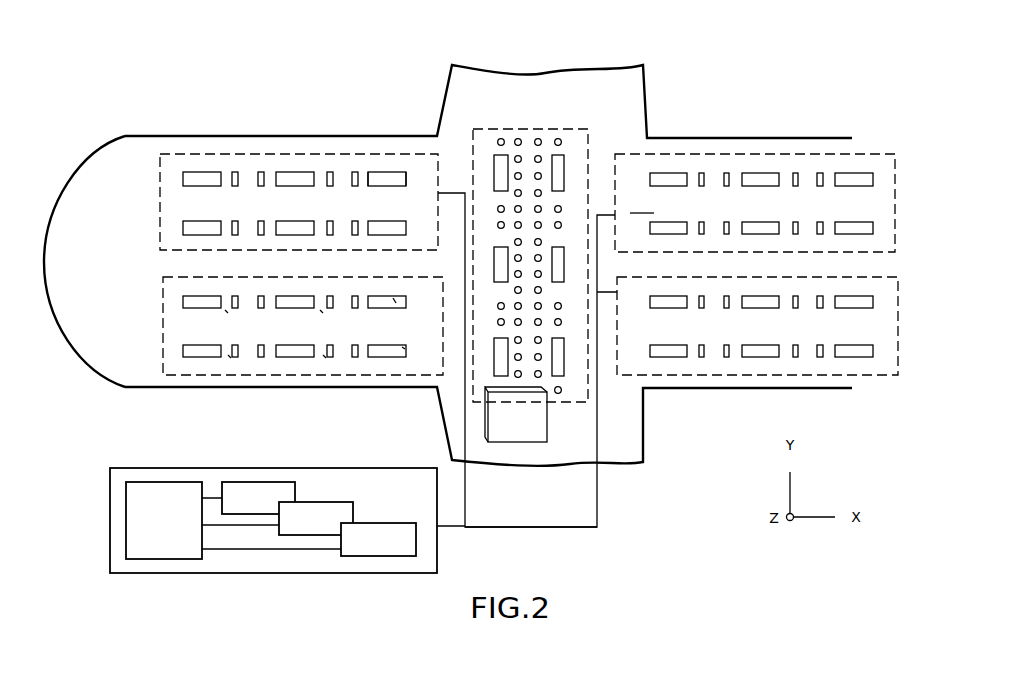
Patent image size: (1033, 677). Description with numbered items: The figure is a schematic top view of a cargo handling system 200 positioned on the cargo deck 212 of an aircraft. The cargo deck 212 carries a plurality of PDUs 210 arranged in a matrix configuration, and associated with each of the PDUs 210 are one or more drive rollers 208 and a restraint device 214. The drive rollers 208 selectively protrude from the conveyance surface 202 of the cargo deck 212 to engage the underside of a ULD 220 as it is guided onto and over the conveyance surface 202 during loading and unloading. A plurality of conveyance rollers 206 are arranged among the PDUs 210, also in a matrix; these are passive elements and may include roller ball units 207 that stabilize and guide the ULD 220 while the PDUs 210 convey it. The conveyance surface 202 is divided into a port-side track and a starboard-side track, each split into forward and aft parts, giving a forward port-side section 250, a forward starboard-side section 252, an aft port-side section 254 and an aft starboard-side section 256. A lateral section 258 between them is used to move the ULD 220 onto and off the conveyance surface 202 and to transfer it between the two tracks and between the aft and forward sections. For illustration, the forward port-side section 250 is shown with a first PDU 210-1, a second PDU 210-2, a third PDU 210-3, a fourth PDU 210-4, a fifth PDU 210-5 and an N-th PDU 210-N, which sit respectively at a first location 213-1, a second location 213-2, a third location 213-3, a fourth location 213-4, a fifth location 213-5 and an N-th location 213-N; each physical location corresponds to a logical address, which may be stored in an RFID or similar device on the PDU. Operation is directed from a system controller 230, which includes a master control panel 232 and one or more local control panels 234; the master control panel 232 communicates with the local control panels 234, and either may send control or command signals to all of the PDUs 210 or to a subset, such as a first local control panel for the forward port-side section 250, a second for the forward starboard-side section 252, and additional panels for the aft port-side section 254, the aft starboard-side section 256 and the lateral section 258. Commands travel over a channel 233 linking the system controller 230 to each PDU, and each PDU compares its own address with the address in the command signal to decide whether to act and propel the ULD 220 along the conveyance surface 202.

The cargo handling system 200 is at (143, 73).
The conveyance surface 202 is at (642, 204).
The conveyance rollers 206 is at (822, 180).
The roller ball units 207 is at (562, 132).
The drive rollers 208 is at (400, 177).
The PDUs 210 is at (395, 174).
The cargo deck 212 is at (342, 177).
The restraint device 214 is at (368, 178).
The ULD 220 is at (500, 435).
The system controller 230 is at (245, 537).
The master control panel 232 is at (172, 559).
The channel 233 is at (570, 527).
The local control panels 234 is at (295, 493).
The forward port-side section 250 is at (276, 345).
The forward starboard-side section 252 is at (270, 163).
The aft port-side section 254 is at (898, 318).
The aft starboard-side section 256 is at (787, 169).
The lateral section 258 is at (524, 244).
The first PDU 210-1 is at (195, 296).
The second PDU 210-2 is at (290, 296).
The third PDU 210-3 is at (375, 296).
The fourth PDU 210-4 is at (215, 357).
The fifth PDU 210-5 is at (310, 357).
The N-th PDU 210-N is at (395, 357).
The first location 213-1 is at (234, 315).
The second location 213-2 is at (329, 315).
The third location 213-3 is at (399, 292).
The fourth location 213-4 is at (238, 360).
The fifth location 213-5 is at (333, 360).
The N-th location 213-N is at (409, 343).